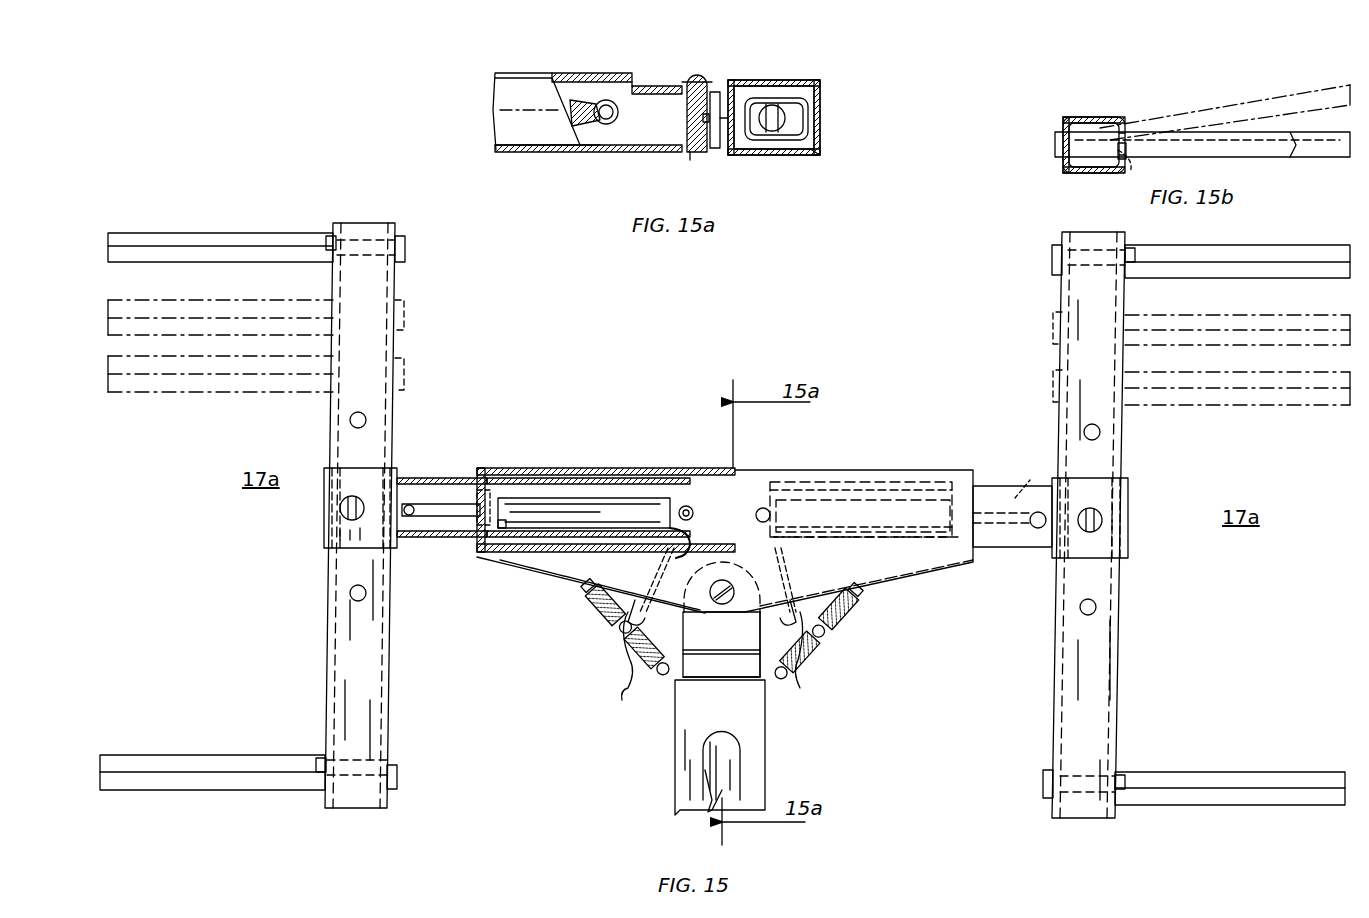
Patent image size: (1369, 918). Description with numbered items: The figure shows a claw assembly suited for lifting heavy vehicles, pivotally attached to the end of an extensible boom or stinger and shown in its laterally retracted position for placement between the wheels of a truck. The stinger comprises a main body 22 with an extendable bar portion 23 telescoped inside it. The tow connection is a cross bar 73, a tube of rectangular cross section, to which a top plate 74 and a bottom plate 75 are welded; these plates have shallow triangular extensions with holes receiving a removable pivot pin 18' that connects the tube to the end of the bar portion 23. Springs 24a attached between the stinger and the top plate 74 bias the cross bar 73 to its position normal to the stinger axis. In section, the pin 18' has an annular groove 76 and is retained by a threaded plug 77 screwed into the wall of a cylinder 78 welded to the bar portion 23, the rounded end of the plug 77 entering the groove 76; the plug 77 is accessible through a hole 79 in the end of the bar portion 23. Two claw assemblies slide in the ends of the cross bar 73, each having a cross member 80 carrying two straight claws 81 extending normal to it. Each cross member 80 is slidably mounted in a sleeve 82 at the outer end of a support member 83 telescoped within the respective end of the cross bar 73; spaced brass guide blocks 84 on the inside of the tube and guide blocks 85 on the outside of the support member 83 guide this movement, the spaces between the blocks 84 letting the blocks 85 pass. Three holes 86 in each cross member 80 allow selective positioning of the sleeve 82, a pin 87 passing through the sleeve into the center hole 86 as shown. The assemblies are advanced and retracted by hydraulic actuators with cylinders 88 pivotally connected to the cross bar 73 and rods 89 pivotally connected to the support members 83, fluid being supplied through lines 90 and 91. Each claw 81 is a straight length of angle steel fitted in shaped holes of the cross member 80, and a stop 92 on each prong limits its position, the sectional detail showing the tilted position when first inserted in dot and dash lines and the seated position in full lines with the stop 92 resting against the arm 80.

In FIG. 15, the pivot pin 18' is at (721, 619).
In FIG. 15A, the pivot pin 18' is at (705, 90).
In FIG. 15, the main body 22 is at (765, 758).
In FIG. 15A, the main body 22 is at (548, 73).
In FIG. 15, the extendable bar portion 23 is at (760, 680).
In FIG. 15A, the extendable bar portion 23 is at (615, 73).
In FIG. 15, the springs 24a is at (830, 668).
In FIG. 15, the tow connection or cross bar 73 is at (598, 444).
In FIG. 15A, the tow connection or cross bar 73 is at (824, 118).
In FIG. 15, the top plate 74 is at (898, 588).
In FIG. 15A, the top plate 74 is at (812, 84).
In FIG. 15A, the bottom plate 75 is at (818, 156).
In FIG. 15A, the annular groove 76 is at (692, 140).
In FIG. 15A, the threaded plug 77 is at (718, 92).
In FIG. 15A, the cylinder 78 is at (680, 120).
In FIG. 15A, the hole 79 is at (745, 150).
In FIG. 15, the cross member 80 is at (330, 598).
In FIG. 15B, the cross member 80 is at (1078, 117).
In FIG. 15, the claw 81 is at (200, 232).
In FIG. 15B, the claw 81 is at (1290, 94).
In FIG. 15, the sleeve 82 is at (378, 468).
In FIG. 15, the support member 83 is at (408, 540).
In FIG. 15, the guide block 84 is at (478, 472).
In FIG. 15, the guide block 85 is at (692, 468).
In FIG. 15, the hole 86 is at (366, 420).
In FIG. 15, the pin 87 is at (342, 516).
In FIG. 15, the cylinder 88 is at (862, 500).
In FIG. 15, the rod 89 is at (455, 520).
In FIG. 15, the line 90 is at (612, 612).
In FIG. 15, the line 91 is at (645, 605).
In FIG. 15, the stop 92 is at (331, 236).
In FIG. 15B, the stop 92 is at (1132, 174).